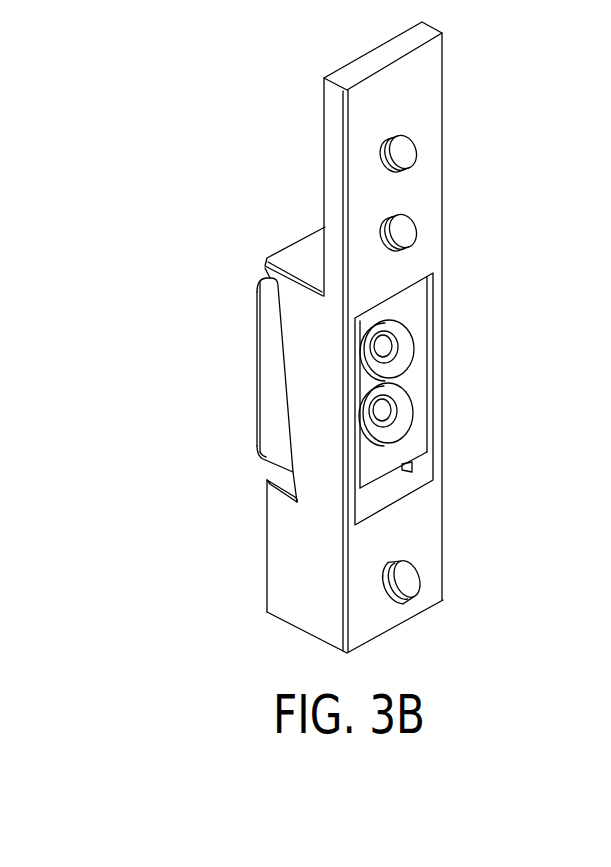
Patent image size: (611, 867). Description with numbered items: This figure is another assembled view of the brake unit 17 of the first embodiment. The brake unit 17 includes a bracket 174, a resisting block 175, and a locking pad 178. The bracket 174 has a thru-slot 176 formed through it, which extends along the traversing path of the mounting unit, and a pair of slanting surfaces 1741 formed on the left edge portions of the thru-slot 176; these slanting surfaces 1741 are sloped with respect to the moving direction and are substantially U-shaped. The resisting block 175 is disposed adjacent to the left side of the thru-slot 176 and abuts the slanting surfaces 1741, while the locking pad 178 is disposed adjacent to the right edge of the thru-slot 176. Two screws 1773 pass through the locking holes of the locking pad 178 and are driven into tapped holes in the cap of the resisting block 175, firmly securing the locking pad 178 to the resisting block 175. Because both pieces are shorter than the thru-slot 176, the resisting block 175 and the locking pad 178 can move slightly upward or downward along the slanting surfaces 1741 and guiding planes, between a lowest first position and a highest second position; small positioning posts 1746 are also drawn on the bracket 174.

The brake unit 17 is at (331, 337).
The bracket 174 is at (300, 553).
The resisting block 175 is at (230, 390).
The slanting surfaces 1741 is at (290, 428).
The thru-slot 176 is at (258, 472).
The locking pad 178 is at (439, 399).
The screws 1773 is at (385, 347).
The positioning posts 1746 is at (407, 150).